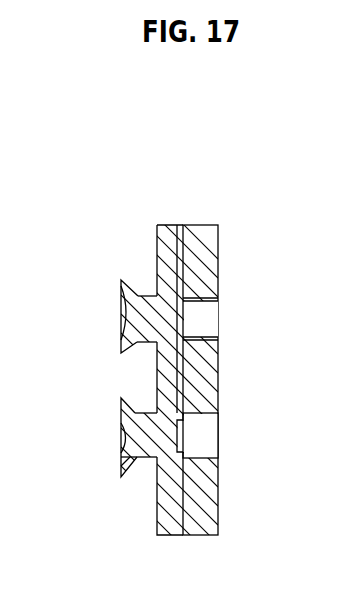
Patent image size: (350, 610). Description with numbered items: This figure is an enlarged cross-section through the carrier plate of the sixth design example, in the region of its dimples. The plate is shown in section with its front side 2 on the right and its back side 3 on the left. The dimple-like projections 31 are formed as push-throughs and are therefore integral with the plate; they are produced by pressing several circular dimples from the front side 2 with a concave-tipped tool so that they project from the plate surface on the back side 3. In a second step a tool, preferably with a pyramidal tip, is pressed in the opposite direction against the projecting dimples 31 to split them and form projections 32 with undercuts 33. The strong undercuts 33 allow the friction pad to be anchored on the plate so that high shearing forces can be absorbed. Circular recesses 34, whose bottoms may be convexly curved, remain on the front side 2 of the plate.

The front side 2 is at (220, 276).
The back side 3 is at (187, 383).
The dimple-like projections 31 is at (120, 317).
The projections 32 is at (119, 477).
The undercuts 33 is at (140, 277).
The circular recesses 34 is at (208, 323).